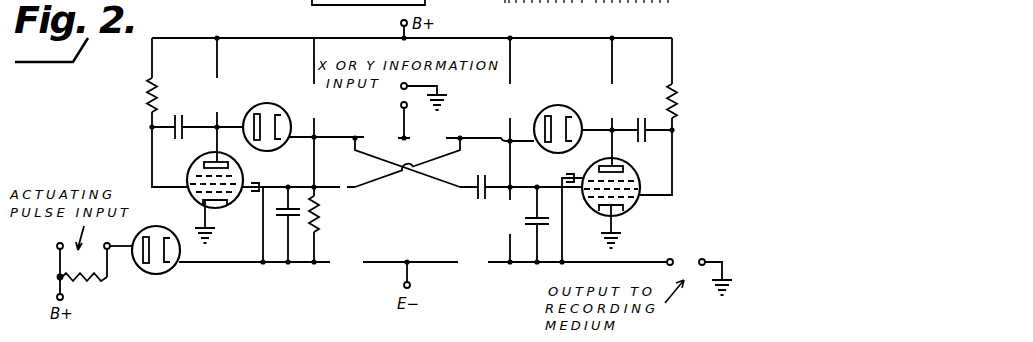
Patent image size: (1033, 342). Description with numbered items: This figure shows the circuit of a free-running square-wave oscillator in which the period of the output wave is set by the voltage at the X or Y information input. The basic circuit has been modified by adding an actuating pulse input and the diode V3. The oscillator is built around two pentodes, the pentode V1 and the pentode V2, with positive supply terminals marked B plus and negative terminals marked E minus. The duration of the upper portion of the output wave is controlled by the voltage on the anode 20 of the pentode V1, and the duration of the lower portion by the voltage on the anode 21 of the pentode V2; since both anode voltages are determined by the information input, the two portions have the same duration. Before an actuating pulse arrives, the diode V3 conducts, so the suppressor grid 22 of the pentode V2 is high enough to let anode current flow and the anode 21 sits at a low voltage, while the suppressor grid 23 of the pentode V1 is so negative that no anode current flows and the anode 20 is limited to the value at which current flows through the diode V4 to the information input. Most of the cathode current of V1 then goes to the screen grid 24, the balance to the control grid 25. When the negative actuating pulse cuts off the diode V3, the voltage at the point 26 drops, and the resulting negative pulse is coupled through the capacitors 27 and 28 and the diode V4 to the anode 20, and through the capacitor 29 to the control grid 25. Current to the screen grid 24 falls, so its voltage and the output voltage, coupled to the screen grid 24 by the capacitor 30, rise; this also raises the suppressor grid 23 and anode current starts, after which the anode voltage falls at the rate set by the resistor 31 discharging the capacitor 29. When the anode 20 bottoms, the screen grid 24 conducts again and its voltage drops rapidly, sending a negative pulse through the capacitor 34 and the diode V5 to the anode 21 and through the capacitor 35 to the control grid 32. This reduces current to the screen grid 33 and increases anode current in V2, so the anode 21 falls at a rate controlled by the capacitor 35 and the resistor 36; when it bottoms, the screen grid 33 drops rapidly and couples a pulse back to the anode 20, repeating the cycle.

The anode 20 is at (617, 154).
The anode 21 is at (202, 160).
The suppressor grid 22 is at (248, 163).
The suppressor grid 23 is at (582, 171).
The screen grid 24 is at (633, 173).
The control grid 25 is at (592, 209).
The point 26 is at (288, 265).
The capacitor 27 is at (290, 204).
The capacitor 28 is at (320, 204).
The capacitor 29 is at (641, 115).
The capacitor 30 is at (534, 224).
The resistor 31 is at (677, 100).
The control grid 32 is at (190, 203).
The screen grid 33 is at (188, 178).
The capacitor 34 is at (478, 196).
The capacitor 35 is at (178, 113).
The resistor 36 is at (147, 92).
The pentode V1 is at (632, 206).
The pentode V2 is at (222, 208).
The diode V3 is at (146, 272).
The diode V4 is at (558, 105).
The diode V5 is at (283, 105).